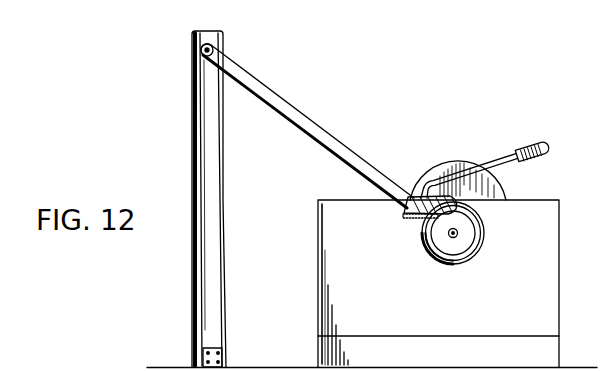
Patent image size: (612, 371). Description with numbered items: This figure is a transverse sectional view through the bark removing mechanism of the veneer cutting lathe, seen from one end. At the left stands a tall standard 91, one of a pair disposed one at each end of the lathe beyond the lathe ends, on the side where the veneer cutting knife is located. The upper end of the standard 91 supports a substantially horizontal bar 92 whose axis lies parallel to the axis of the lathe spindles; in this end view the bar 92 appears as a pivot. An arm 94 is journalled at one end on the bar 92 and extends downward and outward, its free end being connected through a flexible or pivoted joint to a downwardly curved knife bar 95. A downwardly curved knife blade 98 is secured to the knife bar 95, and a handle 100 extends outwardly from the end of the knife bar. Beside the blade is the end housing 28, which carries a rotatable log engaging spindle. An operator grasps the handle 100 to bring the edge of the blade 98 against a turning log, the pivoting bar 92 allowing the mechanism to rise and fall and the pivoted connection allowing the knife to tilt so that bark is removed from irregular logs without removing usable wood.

The end housing 28 is at (320, 256).
The standard 91 is at (193, 202).
The horizontal bar 92 is at (200, 50).
The arm 94 is at (312, 122).
The knife bar 95 is at (405, 213).
The knife blade 98 is at (407, 222).
The handle 100 is at (496, 160).